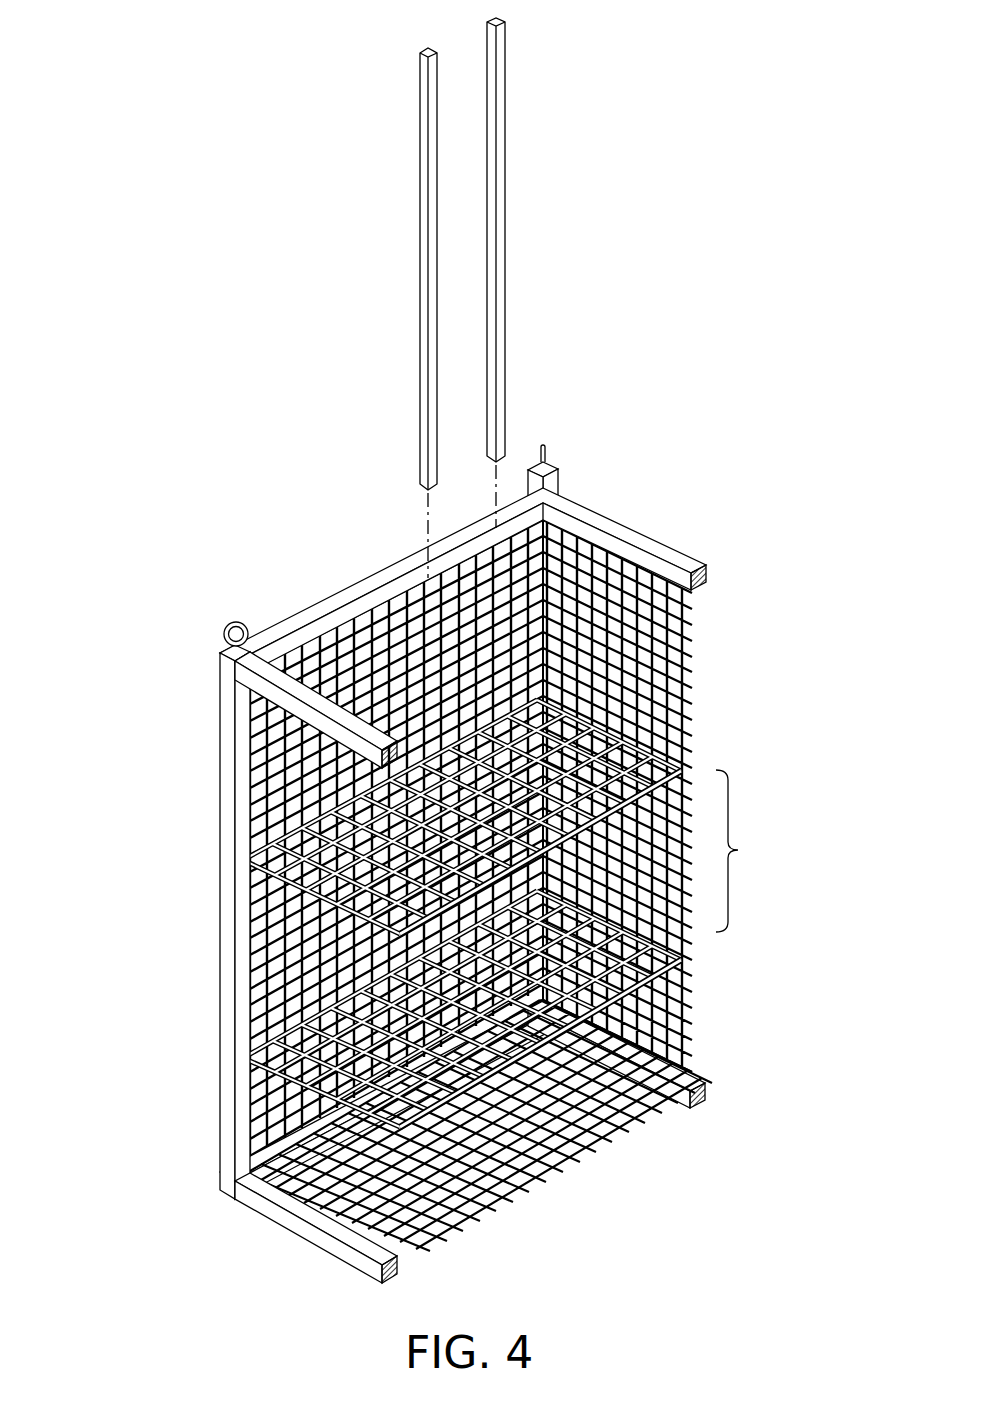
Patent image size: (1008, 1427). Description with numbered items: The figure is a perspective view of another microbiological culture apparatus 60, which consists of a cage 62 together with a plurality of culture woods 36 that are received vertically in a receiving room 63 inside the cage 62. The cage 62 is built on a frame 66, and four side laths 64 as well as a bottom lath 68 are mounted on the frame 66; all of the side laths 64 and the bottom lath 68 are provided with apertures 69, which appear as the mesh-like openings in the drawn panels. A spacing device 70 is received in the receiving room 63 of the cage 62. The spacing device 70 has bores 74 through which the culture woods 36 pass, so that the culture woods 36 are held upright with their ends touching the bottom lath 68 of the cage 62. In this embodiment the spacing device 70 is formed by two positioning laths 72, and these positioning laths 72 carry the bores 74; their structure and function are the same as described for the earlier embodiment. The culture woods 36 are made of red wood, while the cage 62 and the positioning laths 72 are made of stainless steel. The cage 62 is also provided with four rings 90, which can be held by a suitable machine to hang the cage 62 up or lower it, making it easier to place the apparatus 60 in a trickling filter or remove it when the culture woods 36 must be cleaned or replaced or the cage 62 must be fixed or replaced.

The microbiological culture apparatus 60 is at (262, 385).
The culture woods 36 is at (428, 236).
The rings 90 is at (543, 447).
The receiving room 63 is at (541, 590).
The positioning laths 72 is at (597, 710).
The cage 62 is at (702, 546).
The side laths 64 is at (690, 607).
The frame 66 is at (313, 613).
The bores 74 is at (673, 760).
The spacing device 70 is at (749, 851).
The apertures 69 is at (668, 1035).
The bottom lath 68 is at (518, 1195).